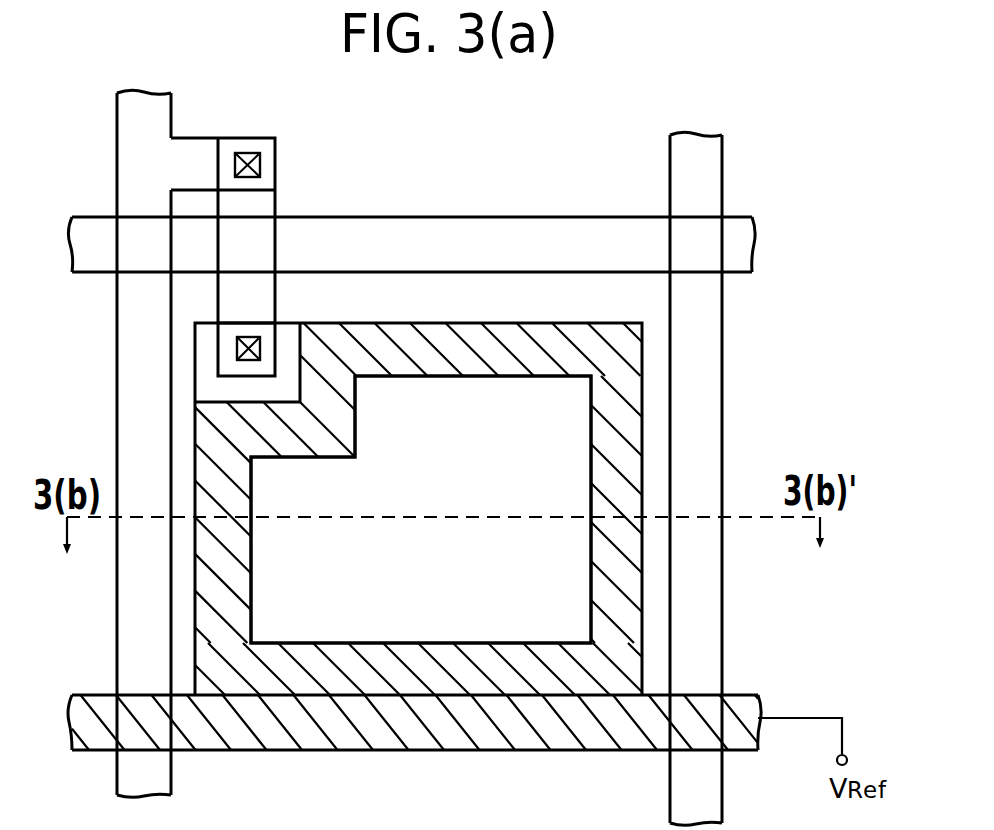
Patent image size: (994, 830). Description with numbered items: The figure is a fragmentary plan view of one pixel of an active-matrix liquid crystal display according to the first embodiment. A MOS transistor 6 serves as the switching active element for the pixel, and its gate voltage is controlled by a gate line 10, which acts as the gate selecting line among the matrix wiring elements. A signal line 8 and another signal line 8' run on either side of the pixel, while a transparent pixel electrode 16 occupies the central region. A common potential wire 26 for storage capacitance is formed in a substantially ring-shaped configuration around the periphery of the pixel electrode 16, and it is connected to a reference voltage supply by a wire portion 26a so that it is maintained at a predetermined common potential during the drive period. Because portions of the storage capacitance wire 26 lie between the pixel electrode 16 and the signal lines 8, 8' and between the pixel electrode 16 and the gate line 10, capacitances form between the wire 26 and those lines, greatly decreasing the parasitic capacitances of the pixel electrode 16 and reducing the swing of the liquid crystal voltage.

The MOS transistor 6 is at (295, 210).
The signal line 8 is at (119, 443).
The signal line 8' is at (725, 478).
The gate line 10 is at (490, 227).
The pixel electrode 16 is at (435, 625).
The common potential wire 26 is at (572, 342).
The wire portion 26a is at (535, 742).